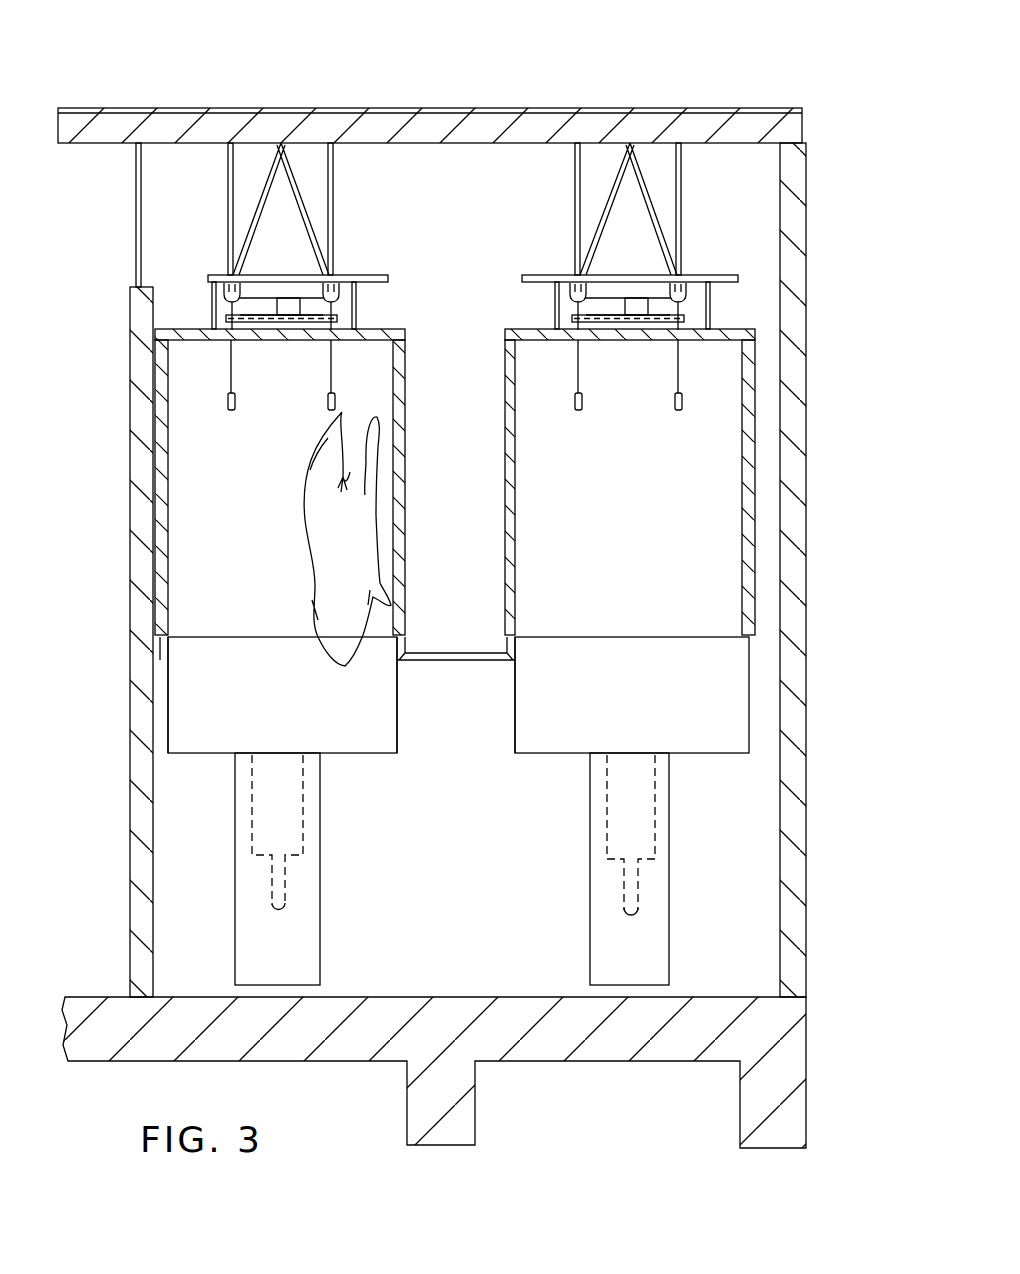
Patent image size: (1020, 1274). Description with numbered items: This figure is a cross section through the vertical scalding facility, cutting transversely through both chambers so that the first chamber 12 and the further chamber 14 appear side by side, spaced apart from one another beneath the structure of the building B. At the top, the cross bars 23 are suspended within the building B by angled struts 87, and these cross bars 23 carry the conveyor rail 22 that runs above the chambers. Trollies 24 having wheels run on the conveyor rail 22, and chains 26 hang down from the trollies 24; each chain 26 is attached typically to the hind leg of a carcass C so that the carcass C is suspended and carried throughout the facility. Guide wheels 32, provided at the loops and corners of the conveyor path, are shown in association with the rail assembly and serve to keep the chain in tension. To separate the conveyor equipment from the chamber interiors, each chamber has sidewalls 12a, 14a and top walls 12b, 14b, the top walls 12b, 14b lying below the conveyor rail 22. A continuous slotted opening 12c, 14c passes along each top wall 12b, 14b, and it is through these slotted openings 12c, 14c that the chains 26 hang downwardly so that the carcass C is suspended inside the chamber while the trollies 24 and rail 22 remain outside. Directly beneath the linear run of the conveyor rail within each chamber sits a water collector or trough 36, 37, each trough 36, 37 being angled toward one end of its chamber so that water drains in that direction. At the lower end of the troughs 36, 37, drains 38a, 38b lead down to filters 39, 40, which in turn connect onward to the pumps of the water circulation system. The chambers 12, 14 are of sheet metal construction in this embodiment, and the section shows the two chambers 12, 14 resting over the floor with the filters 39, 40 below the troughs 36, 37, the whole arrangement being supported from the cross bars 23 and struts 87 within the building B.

The building B is at (441, 103).
The further chamber 14 is at (764, 284).
The first chamber 12 is at (198, 278).
The sidewall 12a is at (165, 483).
The top wall 12b is at (198, 328).
The slotted opening 12c is at (228, 343).
The sidewall 14a is at (750, 513).
The top wall 14b is at (530, 329).
The slotted opening 14c is at (575, 345).
The conveyor rail 22 is at (332, 280).
The cross bars 23 is at (357, 300).
The trollies 24 is at (341, 296).
The chains 26 is at (328, 368).
The guide wheels 32 is at (300, 316).
The water collector or trough 36 is at (195, 668).
The water collector or trough 37 is at (692, 655).
The drain 38a is at (277, 780).
The drain 38b is at (630, 780).
The filter 39 is at (290, 930).
The filter 40 is at (595, 935).
The angled struts 87 is at (335, 178).
The carcass C is at (327, 547).